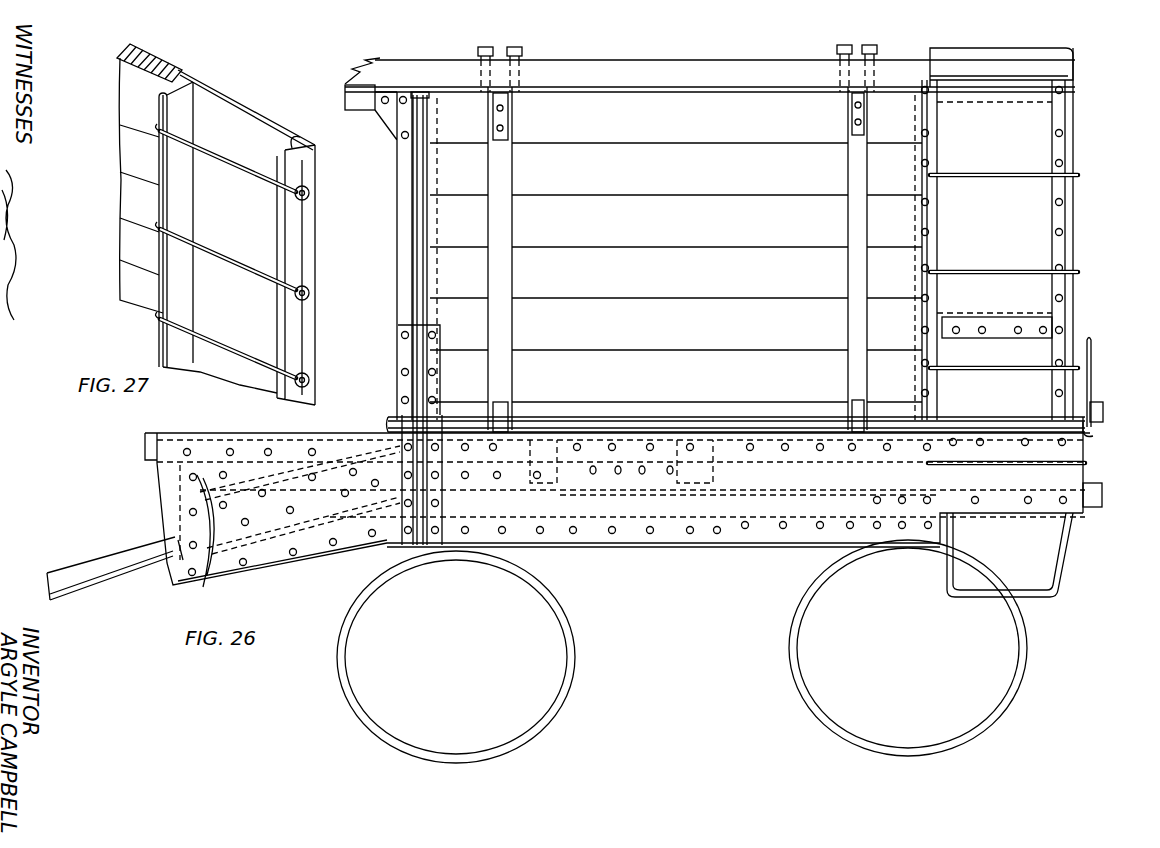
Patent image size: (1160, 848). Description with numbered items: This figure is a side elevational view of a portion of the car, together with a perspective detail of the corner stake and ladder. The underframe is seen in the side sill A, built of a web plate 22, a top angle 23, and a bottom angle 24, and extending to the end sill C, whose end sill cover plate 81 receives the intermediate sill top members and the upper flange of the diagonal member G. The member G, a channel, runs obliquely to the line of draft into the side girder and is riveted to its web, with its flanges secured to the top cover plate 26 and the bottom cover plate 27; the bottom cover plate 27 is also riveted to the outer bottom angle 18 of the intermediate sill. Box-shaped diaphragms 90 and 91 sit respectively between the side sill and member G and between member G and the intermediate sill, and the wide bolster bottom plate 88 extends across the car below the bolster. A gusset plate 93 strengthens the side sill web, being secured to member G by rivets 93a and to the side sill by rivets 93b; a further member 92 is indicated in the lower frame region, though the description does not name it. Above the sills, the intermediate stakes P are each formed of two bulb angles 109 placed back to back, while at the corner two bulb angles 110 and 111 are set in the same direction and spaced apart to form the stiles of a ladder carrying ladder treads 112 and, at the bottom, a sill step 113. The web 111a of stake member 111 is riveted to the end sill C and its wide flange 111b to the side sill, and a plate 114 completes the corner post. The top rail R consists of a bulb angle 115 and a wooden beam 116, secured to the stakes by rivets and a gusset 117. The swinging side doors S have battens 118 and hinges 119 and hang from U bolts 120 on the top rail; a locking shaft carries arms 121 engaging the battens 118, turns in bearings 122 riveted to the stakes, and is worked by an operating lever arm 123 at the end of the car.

In FIG. 27, the swinging side door S is at (150, 62).
In FIG. 26, the swinging side door S is at (553, 127).
In FIG. 26, the top rail R is at (525, 85).
In FIG. 26, the bulb angle 109 is at (412, 95).
In FIG. 27, the bulb angle 110 is at (168, 98).
In FIG. 26, the bulb angle 110 is at (930, 133).
In FIG. 27, the bulb angle 111 is at (280, 150).
In FIG. 26, the bulb angle 111 is at (1057, 125).
In FIG. 27, the web 111a is at (310, 320).
In FIG. 26, the web 111a is at (1085, 500).
In FIG. 27, the wide flange 111b is at (300, 140).
In FIG. 26, the wide flange 111b is at (1070, 513).
In FIG. 27, the ladder tread 112 is at (200, 165).
In FIG. 26, the ladder tread 112 is at (996, 268).
In FIG. 26, the sill step 113 is at (1030, 600).
In FIG. 26, the plate 114 is at (1000, 330).
In FIG. 26, the bulb angle 115 is at (355, 98).
In FIG. 26, the wooden beam 116 is at (588, 62).
In FIG. 26, the gusset 117 is at (388, 128).
In FIG. 26, the batten 118 is at (505, 183).
In FIG. 26, the hinge 119 is at (505, 125).
In FIG. 26, the U bolt 120 is at (490, 47).
In FIG. 26, the arm 121 is at (500, 405).
In FIG. 26, the shaft supporting bearing 122 is at (408, 410).
In FIG. 26, the operating lever arm 123 is at (1093, 342).
In FIG. 26, the top cover plate 26 is at (392, 432).
In FIG. 26, the top angle 23 is at (148, 440).
In FIG. 26, the web plate 22 is at (156, 483).
In FIG. 26, the diagonal member G is at (200, 525).
In FIG. 26, the outer bottom angle 18 is at (72, 585).
In FIG. 26, the gusset plate 93 is at (180, 540).
In FIG. 26, the rivets 93a is at (670, 475).
In FIG. 26, the rivets 93b is at (207, 560).
In FIG. 26, the bottom angle 24 is at (232, 580).
In FIG. 26, the bottom cover plate 27 is at (322, 565).
In FIG. 26, the vertical stake P is at (428, 545).
In FIG. 26, the diaphragm 91 is at (560, 495).
In FIG. 26, the lower plate 92 is at (757, 540).
In FIG. 26, the diaphragm 90 is at (740, 463).
In FIG. 26, the bolster bottom plate 88 is at (740, 497).
In FIG. 26, the end sill cover plate 81 is at (1105, 420).
In FIG. 26, the end sill C is at (1096, 430).